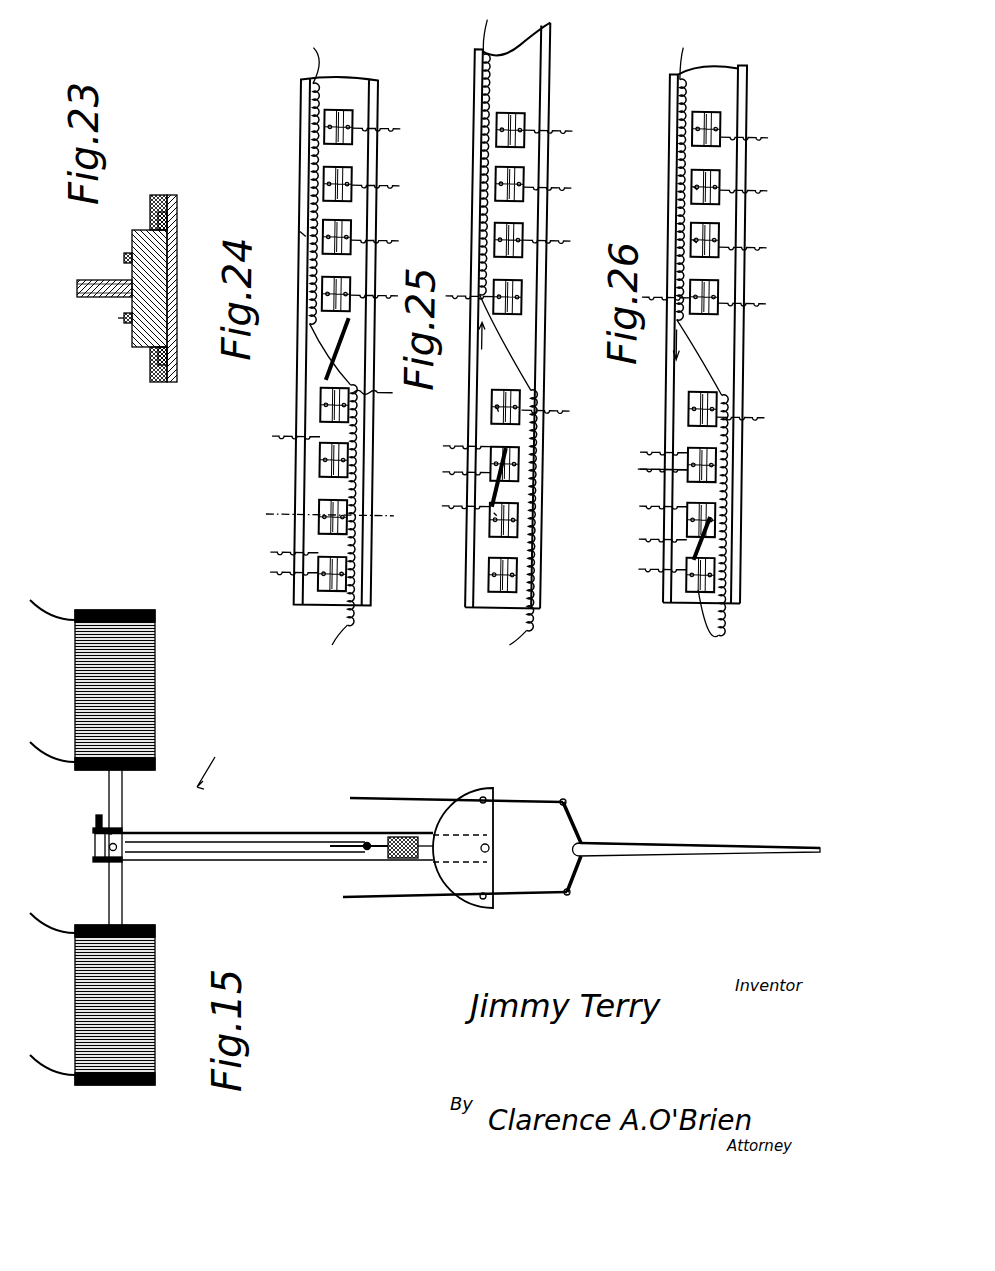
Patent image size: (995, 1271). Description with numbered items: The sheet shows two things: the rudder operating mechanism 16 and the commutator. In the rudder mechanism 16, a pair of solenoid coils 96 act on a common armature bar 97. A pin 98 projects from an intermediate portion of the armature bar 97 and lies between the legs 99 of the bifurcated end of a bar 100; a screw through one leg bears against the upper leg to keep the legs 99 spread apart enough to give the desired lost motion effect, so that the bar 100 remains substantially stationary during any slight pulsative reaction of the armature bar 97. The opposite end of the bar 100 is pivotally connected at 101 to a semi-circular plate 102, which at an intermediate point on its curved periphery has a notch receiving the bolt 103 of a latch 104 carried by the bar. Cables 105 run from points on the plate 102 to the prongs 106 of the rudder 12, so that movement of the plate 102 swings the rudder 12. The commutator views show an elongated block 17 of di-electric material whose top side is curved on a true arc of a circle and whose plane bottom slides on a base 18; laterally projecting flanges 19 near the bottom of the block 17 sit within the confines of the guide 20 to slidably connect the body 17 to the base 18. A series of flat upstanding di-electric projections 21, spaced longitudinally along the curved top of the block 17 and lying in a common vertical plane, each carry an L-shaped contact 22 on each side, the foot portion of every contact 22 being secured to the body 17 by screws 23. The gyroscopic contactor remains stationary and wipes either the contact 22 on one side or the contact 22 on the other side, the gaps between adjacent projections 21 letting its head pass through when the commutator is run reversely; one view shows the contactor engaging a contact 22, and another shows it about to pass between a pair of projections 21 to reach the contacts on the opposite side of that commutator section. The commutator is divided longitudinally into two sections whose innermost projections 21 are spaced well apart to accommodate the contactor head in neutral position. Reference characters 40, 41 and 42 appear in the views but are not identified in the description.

In FIG. 15, the rudder 12 is at (697, 843).
In FIG. 15, the rudder operating mechanism 16 is at (212, 756).
In FIG. 23, the elongated block 17 is at (137, 238).
In FIG. 23, the base 18 is at (178, 240).
In FIG. 24, the base 18 is at (325, 340).
In FIG. 25, the base 18 is at (464, 469).
In FIG. 26, the base 18 is at (721, 463).
In FIG. 23, the laterally projecting flanges 19 is at (125, 256).
In FIG. 25, the laterally projecting flanges 19 is at (502, 513).
In FIG. 26, the laterally projecting flanges 19 is at (695, 187).
In FIG. 23, the guide 20 is at (153, 208).
In FIG. 24, the guide 20 is at (307, 237).
In FIG. 26, the guide 20 is at (670, 117).
In FIG. 23, the upstanding projections 21 is at (78, 287).
In FIG. 23, the L-shaped contact 22 is at (100, 281).
In FIG. 24, the L-shaped contact 22 is at (327, 187).
In FIG. 25, the L-shaped contact 22 is at (495, 140).
In FIG. 26, the L-shaped contact 22 is at (721, 117).
In FIG. 23, the screws 23 is at (124, 318).
In FIG. 24, the screws 23 is at (327, 508).
In FIG. 25, the screws 23 is at (503, 407).
In FIG. 26, the screws 23 is at (695, 240).
In FIG. 24, the rail 40 is at (372, 147).
In FIG. 25, the rail 40 is at (490, 253).
In FIG. 24, the wire 41 is at (340, 110).
In FIG. 25, the wire 41 is at (512, 112).
In FIG. 26, the wire 41 is at (715, 257).
In FIG. 26, the lead 42 is at (648, 462).
In FIG. 15, the solenoid coils 96 is at (145, 667).
In FIG. 15, the common armature bar 97 is at (109, 909).
In FIG. 15, the pin 98 is at (119, 848).
In FIG. 15, the legs 99 is at (99, 816).
In FIG. 15, the bar 100 is at (309, 833).
In FIG. 15, the pivotal connection 101 is at (497, 847).
In FIG. 15, the semi-circular plate 102 is at (460, 817).
In FIG. 15, the bolt 103 is at (427, 840).
In FIG. 15, the latch 104 is at (397, 837).
In FIG. 15, the cables 105 is at (537, 800).
In FIG. 15, the prongs 106 is at (579, 822).